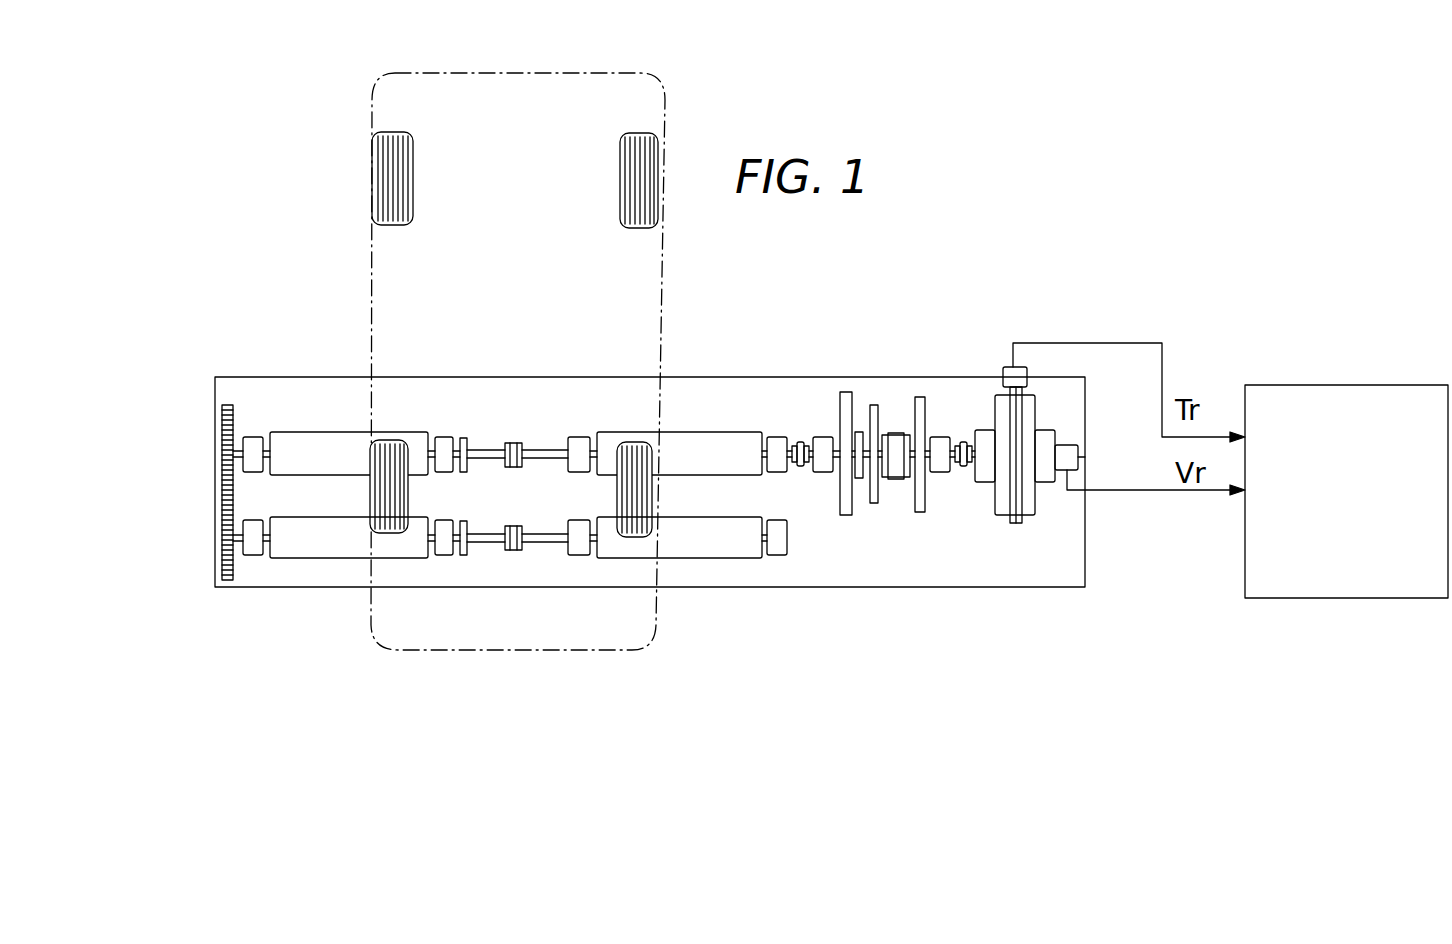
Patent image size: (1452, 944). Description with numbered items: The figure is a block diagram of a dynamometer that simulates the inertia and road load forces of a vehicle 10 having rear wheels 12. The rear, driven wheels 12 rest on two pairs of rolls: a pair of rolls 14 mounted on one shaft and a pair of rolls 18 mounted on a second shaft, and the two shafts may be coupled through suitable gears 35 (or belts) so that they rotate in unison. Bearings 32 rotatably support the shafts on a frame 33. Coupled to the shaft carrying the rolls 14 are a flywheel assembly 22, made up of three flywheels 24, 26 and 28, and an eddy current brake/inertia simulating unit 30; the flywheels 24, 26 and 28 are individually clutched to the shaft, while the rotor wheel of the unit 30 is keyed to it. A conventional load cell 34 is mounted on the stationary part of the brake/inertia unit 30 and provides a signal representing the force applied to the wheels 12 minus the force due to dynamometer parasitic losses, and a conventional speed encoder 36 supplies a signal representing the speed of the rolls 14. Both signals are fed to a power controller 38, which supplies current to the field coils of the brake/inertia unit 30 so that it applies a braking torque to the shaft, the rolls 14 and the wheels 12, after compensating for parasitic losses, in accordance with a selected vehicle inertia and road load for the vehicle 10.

The vehicle 10 is at (668, 80).
The rear wheels 12 is at (386, 440).
The pair of rolls 14 is at (312, 432).
The pair of rolls 18 is at (315, 560).
The flywheel assembly 22 is at (891, 439).
The flywheel 24 is at (846, 516).
The flywheel 26 is at (873, 504).
The flywheel 28 is at (920, 513).
The eddy current brake/inertia simulating unit 30 is at (1036, 505).
The bearings 32 is at (253, 437).
The frame 33 is at (875, 589).
The load cell 34 is at (1006, 367).
The gears 35 is at (222, 530).
The speed encoder 36 is at (1080, 456).
The power controller 38 is at (1348, 385).